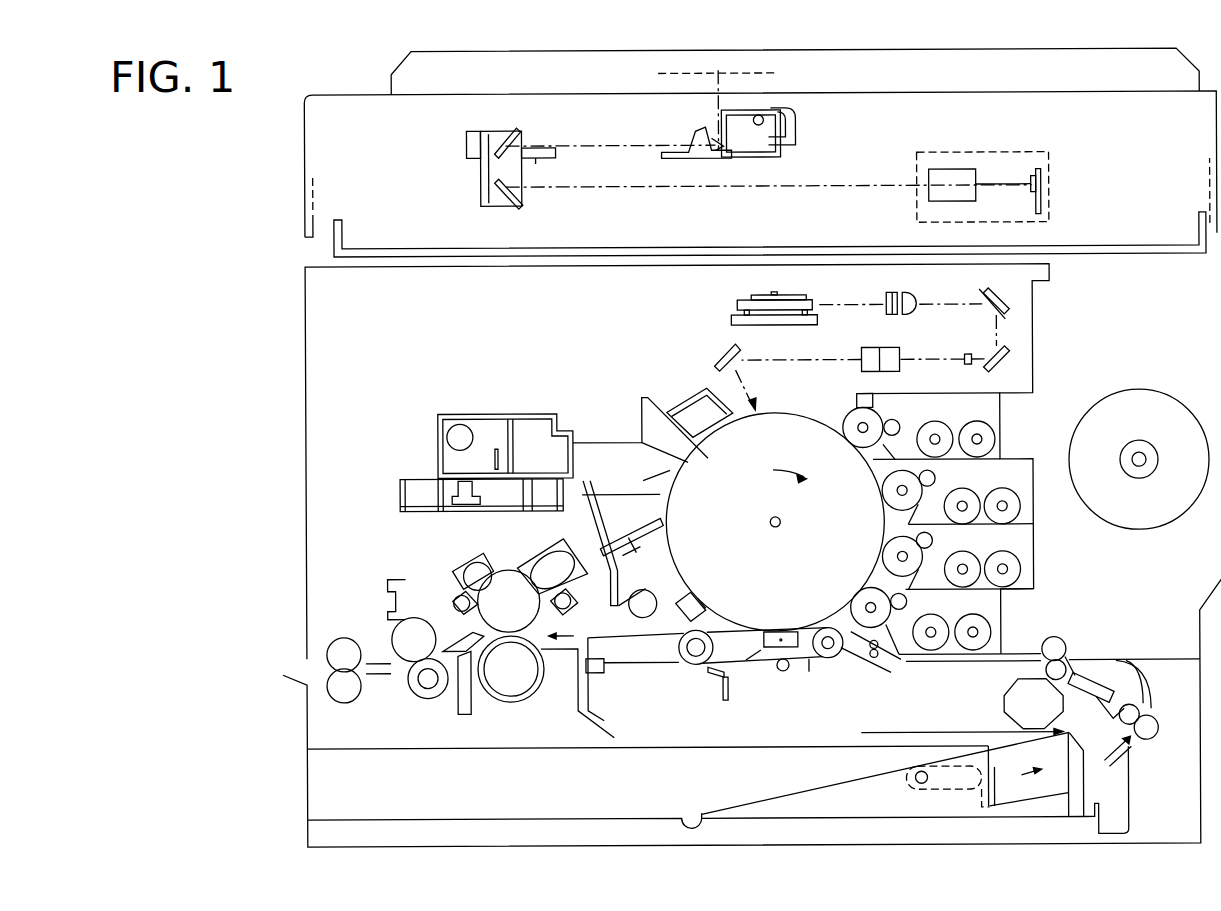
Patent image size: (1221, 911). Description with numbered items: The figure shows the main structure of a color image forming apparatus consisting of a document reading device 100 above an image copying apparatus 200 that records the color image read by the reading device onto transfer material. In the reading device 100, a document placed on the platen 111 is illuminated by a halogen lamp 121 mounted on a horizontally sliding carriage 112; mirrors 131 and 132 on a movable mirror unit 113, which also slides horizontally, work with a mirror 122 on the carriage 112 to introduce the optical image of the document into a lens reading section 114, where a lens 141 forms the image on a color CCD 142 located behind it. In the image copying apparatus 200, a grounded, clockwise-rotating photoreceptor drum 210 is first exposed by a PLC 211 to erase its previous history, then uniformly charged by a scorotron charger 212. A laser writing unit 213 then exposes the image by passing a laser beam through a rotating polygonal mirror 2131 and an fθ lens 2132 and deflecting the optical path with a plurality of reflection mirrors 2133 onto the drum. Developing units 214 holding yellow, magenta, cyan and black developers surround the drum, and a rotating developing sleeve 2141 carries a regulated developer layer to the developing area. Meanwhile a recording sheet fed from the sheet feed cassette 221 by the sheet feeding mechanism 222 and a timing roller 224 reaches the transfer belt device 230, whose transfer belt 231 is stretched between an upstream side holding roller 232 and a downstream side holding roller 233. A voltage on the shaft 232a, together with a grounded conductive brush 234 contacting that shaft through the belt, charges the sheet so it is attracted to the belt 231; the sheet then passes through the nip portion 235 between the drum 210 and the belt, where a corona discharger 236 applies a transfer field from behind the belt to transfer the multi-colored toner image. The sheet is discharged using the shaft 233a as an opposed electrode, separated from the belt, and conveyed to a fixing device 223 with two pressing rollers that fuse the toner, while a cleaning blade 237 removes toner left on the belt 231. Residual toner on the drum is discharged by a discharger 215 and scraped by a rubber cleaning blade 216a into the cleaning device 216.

The document reading device 100 is at (356, 112).
The platen 111 is at (851, 77).
The carriage 112 is at (783, 152).
The movable mirror unit 113 is at (480, 181).
The lens reading section 114 is at (930, 152).
The halogen lamp 121 is at (766, 121).
The mirror 122 is at (716, 150).
The mirror 131 is at (520, 130).
The mirror 132 is at (520, 200).
The lens 141 is at (953, 170).
The color CCD 142 is at (1039, 170).
The image copying apparatus 200 is at (316, 476).
The photoreceptor drum 210 is at (781, 413).
The PLC 211 is at (675, 463).
The scorotron charger 212 is at (707, 432).
The laser writing unit 213 is at (727, 305).
The developing units 214 is at (995, 412).
The discharger 215 is at (703, 595).
The cleaning device 216 is at (625, 510).
The cleaning blade 216a is at (672, 538).
The sheet feed cassette 221 is at (597, 812).
The sheet feeding mechanism 222 is at (1057, 642).
The fixing device 223 is at (508, 572).
The timing roller 224 is at (893, 660).
The transfer belt device 230 is at (782, 675).
The transfer belt 231 is at (806, 673).
The upstream side holding roller 232 is at (897, 707).
The shaft 232a is at (963, 723).
The downstream side holding roller 233 is at (683, 637).
The shaft 233a is at (697, 666).
The conductive brush 234 is at (845, 632).
The nip portion 235 is at (770, 632).
The corona discharger 236 is at (760, 655).
The cleaning blade 237 is at (712, 675).
The rotating polygonal mirror 2131 is at (808, 302).
The fθ lens 2132 is at (910, 290).
The reflection mirrors 2133 is at (1008, 300).
The developing sleeve 2141 is at (872, 404).